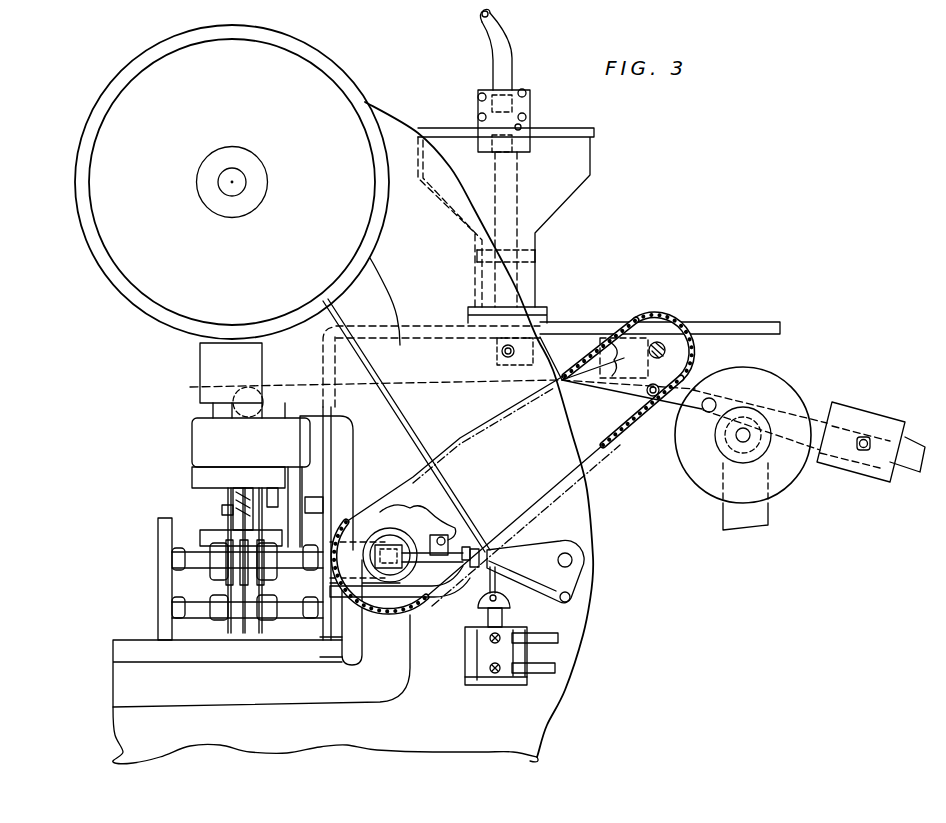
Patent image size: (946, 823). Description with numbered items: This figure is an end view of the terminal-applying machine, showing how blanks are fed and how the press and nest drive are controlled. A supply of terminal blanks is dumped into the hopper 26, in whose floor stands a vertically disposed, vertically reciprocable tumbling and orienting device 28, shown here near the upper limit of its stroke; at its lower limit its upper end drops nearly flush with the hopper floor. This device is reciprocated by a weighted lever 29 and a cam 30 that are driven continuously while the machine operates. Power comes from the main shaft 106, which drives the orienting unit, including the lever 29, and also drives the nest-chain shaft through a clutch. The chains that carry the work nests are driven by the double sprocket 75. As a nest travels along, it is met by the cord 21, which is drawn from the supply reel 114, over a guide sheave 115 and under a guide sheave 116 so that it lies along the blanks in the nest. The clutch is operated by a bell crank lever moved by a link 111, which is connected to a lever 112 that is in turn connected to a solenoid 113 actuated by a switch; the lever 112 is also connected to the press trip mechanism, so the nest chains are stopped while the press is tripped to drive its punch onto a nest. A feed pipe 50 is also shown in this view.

The cord 21 is at (235, 445).
The hopper 26 is at (572, 180).
The tumbling and orienting device 28 is at (537, 226).
The weighted lever 29 is at (673, 404).
The cam 30 is at (621, 331).
The feed pipe 50 is at (489, 36).
The double sprocket 75 is at (213, 568).
The main shaft 106 is at (668, 330).
The link 111 is at (540, 588).
The lever 112 is at (532, 554).
The solenoid 113 is at (477, 661).
The supply reel 114 is at (790, 393).
The guide sheave 115 is at (424, 398).
The guide sheave 116 is at (231, 526).